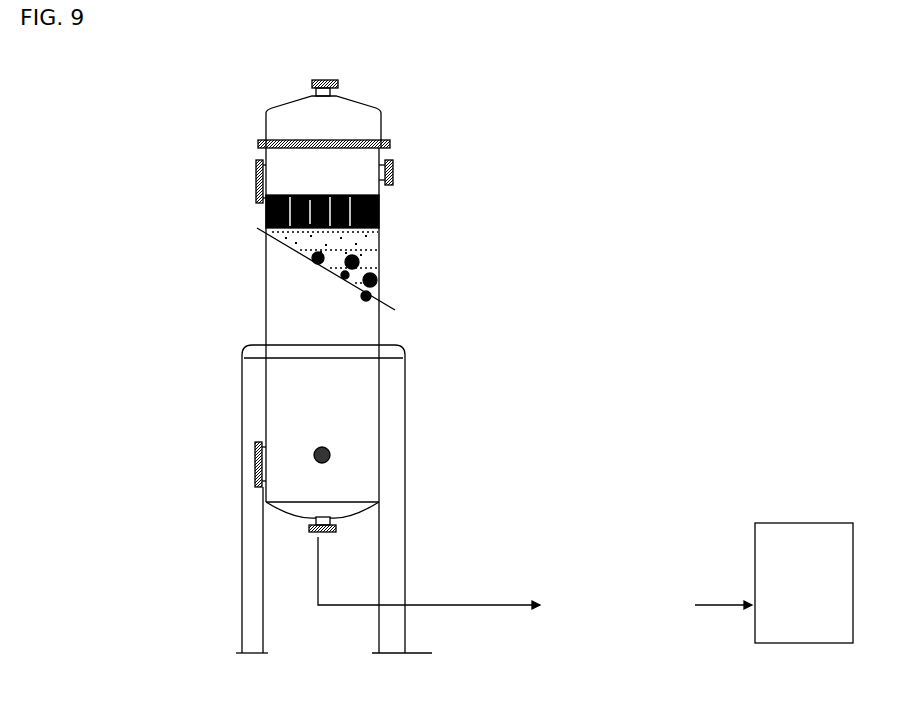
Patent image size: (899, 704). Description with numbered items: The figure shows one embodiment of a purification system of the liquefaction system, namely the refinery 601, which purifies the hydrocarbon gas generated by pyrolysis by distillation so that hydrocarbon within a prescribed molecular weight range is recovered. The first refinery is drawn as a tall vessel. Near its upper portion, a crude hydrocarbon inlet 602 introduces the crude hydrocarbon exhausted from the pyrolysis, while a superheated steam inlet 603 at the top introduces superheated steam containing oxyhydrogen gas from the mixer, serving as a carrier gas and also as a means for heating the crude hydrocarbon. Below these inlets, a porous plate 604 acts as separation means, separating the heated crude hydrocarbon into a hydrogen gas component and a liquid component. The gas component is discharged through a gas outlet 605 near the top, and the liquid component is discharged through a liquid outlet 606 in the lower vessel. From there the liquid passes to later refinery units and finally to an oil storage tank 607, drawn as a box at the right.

The refinery 601 is at (462, 95).
The crude hydrocarbon inlet 602 is at (256, 185).
The superheated steam inlet 603 is at (327, 77).
The porous plate 604 is at (380, 298).
The gas outlet 605 is at (408, 170).
The liquid outlet 606 is at (258, 463).
The oil storage tank 607 is at (804, 583).